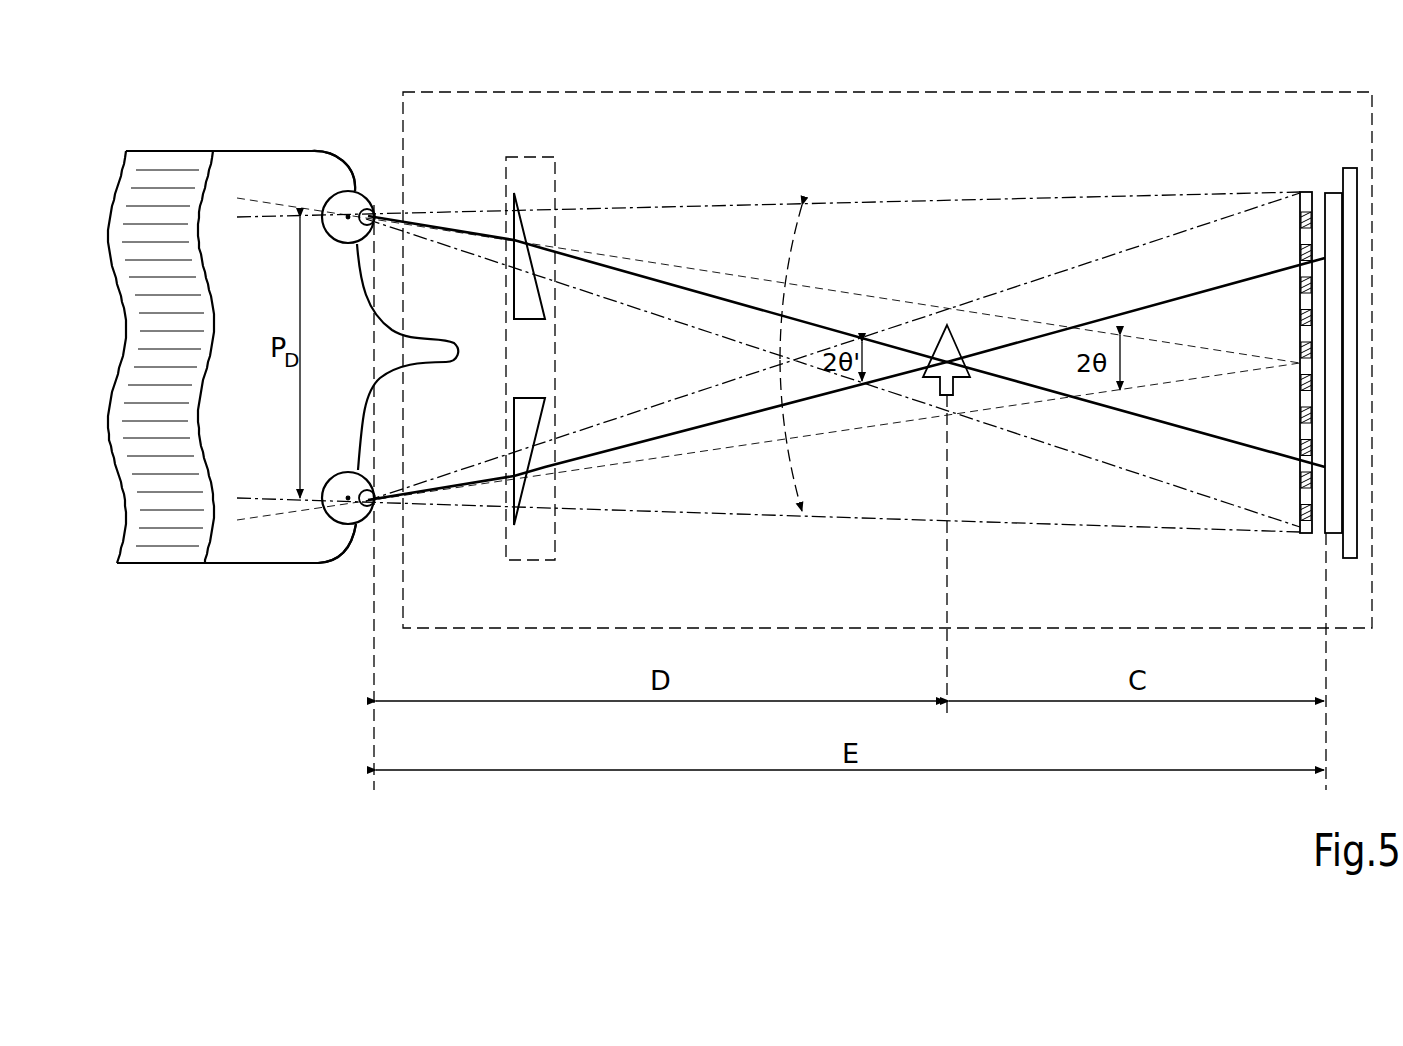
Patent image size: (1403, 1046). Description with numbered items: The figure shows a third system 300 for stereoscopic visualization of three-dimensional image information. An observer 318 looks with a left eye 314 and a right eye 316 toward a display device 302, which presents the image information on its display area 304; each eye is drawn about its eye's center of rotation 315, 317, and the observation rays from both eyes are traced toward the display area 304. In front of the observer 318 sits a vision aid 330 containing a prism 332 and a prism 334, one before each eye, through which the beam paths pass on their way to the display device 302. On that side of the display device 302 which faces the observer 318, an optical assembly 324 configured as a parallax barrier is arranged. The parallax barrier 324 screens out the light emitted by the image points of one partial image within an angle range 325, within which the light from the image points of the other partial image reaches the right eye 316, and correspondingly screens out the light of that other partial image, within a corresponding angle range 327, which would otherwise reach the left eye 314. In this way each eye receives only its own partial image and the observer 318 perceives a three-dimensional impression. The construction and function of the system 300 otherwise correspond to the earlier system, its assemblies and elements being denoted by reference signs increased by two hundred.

The system 300 is at (1203, 92).
The display device 302 is at (1350, 168).
The display area 304 is at (1331, 193).
The eye 314 is at (338, 243).
The eye's center of rotation 315 is at (347, 192).
The eye 316 is at (345, 472).
The eye's center of rotation 317 is at (348, 523).
The observer 318 is at (218, 563).
The parallax barrier 324 is at (1300, 192).
The angle range 325 is at (802, 245).
The angle range 327 is at (802, 470).
The vision aid 330 is at (522, 355).
The prism 332 is at (517, 200).
The prism 334 is at (520, 515).